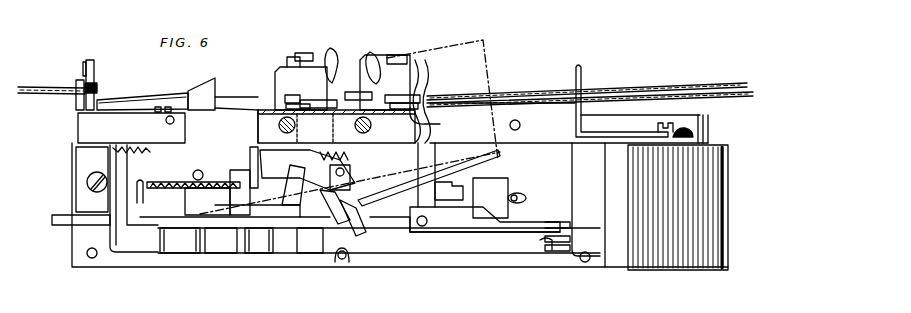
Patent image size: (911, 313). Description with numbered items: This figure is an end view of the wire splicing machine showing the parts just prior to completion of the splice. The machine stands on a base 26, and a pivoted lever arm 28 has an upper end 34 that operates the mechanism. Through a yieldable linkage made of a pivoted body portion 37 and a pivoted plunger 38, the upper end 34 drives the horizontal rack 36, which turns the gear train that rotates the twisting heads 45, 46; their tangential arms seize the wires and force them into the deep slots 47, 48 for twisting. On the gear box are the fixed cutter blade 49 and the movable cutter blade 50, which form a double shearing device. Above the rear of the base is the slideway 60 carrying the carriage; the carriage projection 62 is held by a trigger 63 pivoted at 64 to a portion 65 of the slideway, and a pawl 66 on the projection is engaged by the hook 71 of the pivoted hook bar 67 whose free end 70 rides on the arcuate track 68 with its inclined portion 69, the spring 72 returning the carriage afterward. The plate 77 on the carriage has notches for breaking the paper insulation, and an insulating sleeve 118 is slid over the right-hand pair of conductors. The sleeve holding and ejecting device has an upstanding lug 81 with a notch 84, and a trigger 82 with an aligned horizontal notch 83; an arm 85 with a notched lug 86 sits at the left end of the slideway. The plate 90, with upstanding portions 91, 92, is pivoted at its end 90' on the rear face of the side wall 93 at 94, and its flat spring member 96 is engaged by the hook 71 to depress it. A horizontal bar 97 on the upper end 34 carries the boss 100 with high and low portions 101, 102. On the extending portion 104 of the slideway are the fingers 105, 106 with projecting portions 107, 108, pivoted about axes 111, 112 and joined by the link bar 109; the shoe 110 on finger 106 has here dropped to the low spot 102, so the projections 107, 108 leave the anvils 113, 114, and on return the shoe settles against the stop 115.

The base 26 is at (153, 266).
The lever arm 28 is at (562, 216).
The upper end of the lever arm 34 is at (476, 232).
The horizontal rack 36 is at (150, 183).
The pivoted body portion 37 is at (508, 184).
The pivoted plunger 38 is at (466, 183).
The twisting head 45 is at (395, 100).
The twisting head 46 is at (292, 100).
The slot 47 is at (412, 110).
The slot 48 is at (366, 72).
The fixed cutter blade 49 is at (300, 55).
The movable cutter blade 50 is at (336, 52).
The slideway 60 is at (85, 126).
The projection 62 is at (360, 160).
The trigger 63 is at (277, 200).
The pivot 64 is at (199, 182).
The portion of the slideway 65 is at (222, 185).
The pawl 66 is at (358, 188).
The pivoted hook bar 67 is at (396, 230).
The arcuate track 68 is at (437, 252).
The inclined portion 69 is at (552, 246).
The free end of the hook bar 70 is at (370, 235).
The hook 71 is at (352, 240).
The spring 72 is at (152, 142).
The plate 77 is at (289, 70).
The upstanding lug 81 is at (95, 63).
The trigger 82 is at (86, 63).
The horizontal notch 83 is at (98, 88).
The notch 84 is at (76, 85).
The arm 85 is at (636, 132).
The notched lug 86 is at (582, 80).
The plate 90 is at (485, 219).
The end of the plate 90' is at (100, 198).
The upstanding portion 91 is at (203, 90).
The upstanding portion 92 is at (483, 42).
The side wall 93 is at (75, 240).
The pivot 94 is at (87, 178).
The flat spring member 96 is at (382, 200).
The horizontal bar 97 is at (195, 217).
The boss 100 is at (258, 215).
The high portion 101 is at (178, 205).
The low portion 102 is at (336, 220).
The extending portion of the slideway 104 is at (424, 113).
The finger 105 is at (345, 104).
The finger 106 is at (290, 107).
The projecting portion 107 is at (356, 95).
The projecting portion 108 is at (292, 98).
The link bar 109 is at (305, 205).
The shoe 110 is at (266, 205).
The axis 111 is at (371, 131).
The axis 112 is at (258, 126).
The anvil 113 is at (420, 126).
The anvil 114 is at (301, 123).
The stop 115 is at (135, 196).
The insulating sleeve 118 is at (156, 95).